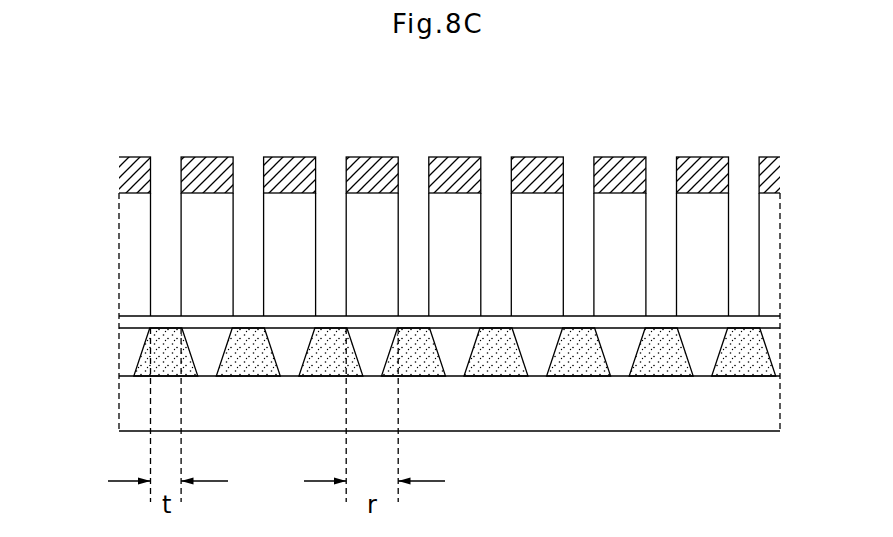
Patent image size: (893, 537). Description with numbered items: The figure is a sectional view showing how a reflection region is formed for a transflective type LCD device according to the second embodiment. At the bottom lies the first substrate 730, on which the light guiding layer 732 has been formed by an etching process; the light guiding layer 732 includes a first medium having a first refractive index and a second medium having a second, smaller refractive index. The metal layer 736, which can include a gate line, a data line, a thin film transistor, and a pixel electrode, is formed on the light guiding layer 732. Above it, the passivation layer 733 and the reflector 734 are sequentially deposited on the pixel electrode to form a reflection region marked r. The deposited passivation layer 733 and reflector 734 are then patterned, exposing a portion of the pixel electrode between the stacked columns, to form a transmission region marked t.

The first substrate 730 is at (767, 402).
The light guiding layer 732 is at (773, 357).
The passivation layer 733 is at (197, 258).
The reflector 734 is at (202, 185).
The metal layer 736 is at (773, 317).